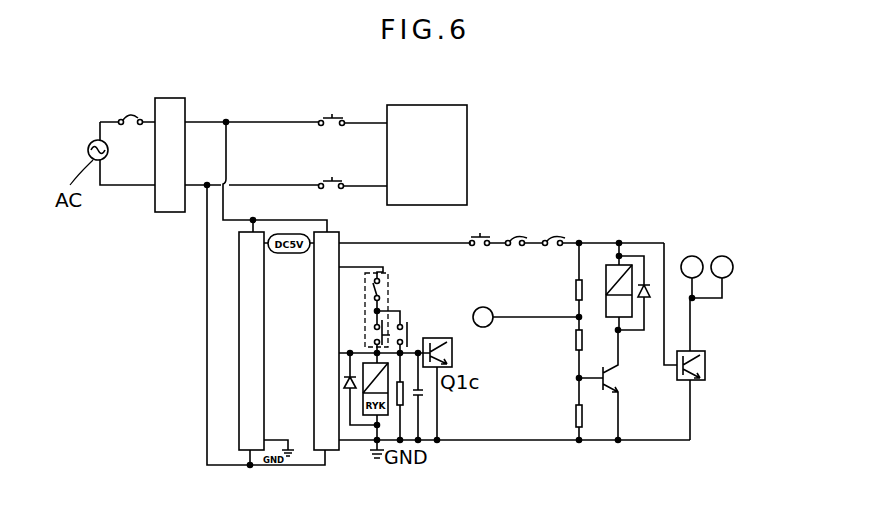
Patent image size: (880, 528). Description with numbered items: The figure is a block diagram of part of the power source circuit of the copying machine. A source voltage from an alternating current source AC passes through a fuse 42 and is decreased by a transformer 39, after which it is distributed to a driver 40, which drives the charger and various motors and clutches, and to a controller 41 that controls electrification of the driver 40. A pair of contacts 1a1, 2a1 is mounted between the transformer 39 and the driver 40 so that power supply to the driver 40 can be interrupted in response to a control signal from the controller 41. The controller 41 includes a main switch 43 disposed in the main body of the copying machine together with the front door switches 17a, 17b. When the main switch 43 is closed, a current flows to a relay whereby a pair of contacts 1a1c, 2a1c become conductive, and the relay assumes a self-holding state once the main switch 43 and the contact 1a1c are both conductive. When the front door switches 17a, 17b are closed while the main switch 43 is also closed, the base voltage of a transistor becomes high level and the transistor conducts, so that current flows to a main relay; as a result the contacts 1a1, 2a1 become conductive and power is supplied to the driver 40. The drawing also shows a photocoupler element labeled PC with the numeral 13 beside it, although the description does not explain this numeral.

The fuse 42 is at (132, 112).
The transformer 39 is at (150, 202).
The driver 40 is at (468, 127).
The contact 1a1 is at (325, 117).
The contact 2a1 is at (327, 180).
The main switch 43 is at (383, 270).
The contact 1a1c is at (408, 322).
The contact 2a1c is at (482, 236).
The front door switch 17a is at (507, 252).
The front door switch 17b is at (552, 250).
The controller 41 is at (606, 214).
The photocoupler PC 13 is at (487, 330).